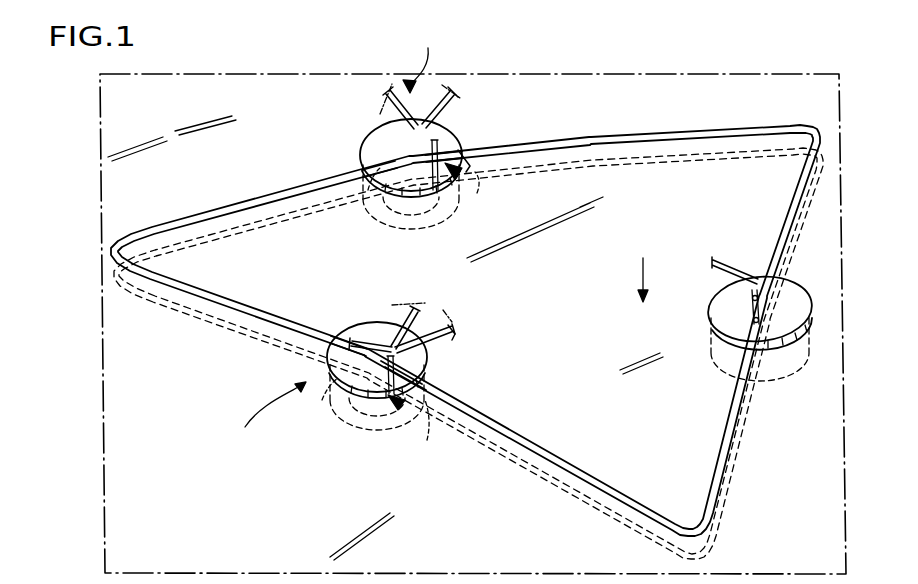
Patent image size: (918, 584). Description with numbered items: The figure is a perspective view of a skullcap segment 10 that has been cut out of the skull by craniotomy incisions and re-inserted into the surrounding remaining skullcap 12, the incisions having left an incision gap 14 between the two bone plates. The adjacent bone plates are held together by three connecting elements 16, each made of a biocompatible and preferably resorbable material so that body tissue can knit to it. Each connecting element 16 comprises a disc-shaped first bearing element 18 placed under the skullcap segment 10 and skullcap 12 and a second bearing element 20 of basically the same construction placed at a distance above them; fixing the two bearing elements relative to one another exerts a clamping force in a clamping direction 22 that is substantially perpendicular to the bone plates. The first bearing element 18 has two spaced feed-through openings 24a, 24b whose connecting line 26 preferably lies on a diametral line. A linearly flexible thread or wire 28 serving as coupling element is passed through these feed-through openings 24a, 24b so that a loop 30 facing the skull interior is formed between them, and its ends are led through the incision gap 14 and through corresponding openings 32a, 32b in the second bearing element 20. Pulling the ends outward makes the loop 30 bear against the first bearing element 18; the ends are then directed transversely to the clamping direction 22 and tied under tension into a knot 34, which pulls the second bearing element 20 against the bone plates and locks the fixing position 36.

The skullcap segment 10 is at (567, 289).
The remaining skullcap 12 is at (188, 507).
The incision gap 14 is at (178, 280).
The connecting element 16 is at (345, 143).
The first bearing element 18 is at (392, 218).
The second bearing element 20 is at (430, 130).
The clamping direction 22 is at (626, 277).
The feed-through opening 24a is at (368, 190).
The feed-through opening 24b is at (477, 193).
The connecting line 26 is at (443, 203).
The thread or wire 28 is at (470, 168).
The loop 30 is at (433, 195).
The opening 32a is at (365, 156).
The opening 32b is at (465, 140).
The knot 34 is at (385, 127).
The fixing position 36 is at (328, 229).